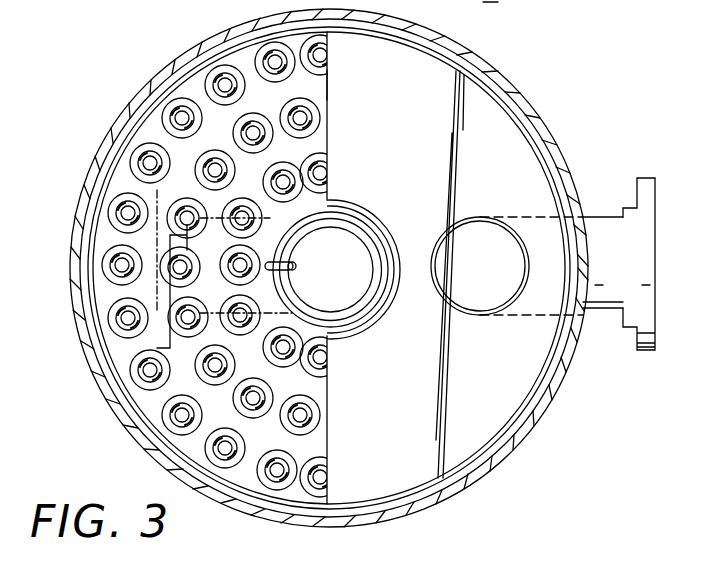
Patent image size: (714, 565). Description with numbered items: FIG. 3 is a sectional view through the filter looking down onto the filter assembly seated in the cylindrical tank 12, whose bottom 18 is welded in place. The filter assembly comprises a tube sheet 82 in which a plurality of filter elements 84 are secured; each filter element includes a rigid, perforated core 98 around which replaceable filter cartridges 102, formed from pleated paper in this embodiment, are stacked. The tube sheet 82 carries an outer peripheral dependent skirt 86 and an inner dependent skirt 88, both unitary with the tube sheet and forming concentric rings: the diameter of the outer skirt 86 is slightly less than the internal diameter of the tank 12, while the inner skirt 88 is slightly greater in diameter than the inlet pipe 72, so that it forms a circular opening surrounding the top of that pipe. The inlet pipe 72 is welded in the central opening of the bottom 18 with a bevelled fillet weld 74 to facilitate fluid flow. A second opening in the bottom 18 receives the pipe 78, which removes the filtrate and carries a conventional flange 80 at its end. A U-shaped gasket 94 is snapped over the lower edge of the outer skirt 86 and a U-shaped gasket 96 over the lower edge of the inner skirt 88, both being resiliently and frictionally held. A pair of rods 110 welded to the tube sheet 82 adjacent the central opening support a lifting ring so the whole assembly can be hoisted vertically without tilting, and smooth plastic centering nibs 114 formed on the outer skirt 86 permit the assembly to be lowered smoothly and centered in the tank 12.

The tank 12 is at (520, 450).
The bottom 18 is at (438, 114).
The pipe 72 is at (329, 186).
The bevelled fillet weld 74 is at (367, 231).
The pipe 78 is at (500, 278).
The flange 80 is at (643, 178).
The tube sheet 82 is at (310, 90).
The filter elements 84 is at (215, 62).
The outer peripheral dependent skirt 86 is at (548, 392).
The inner dependent skirt 88 is at (358, 212).
The U-shaped gasket 94 is at (548, 356).
The U-shaped gasket 96 is at (400, 248).
The core 98 is at (280, 460).
The replaceable filter cartridges 102 is at (297, 363).
The rods 110 is at (296, 270).
The centering nibs 114 is at (82, 263).